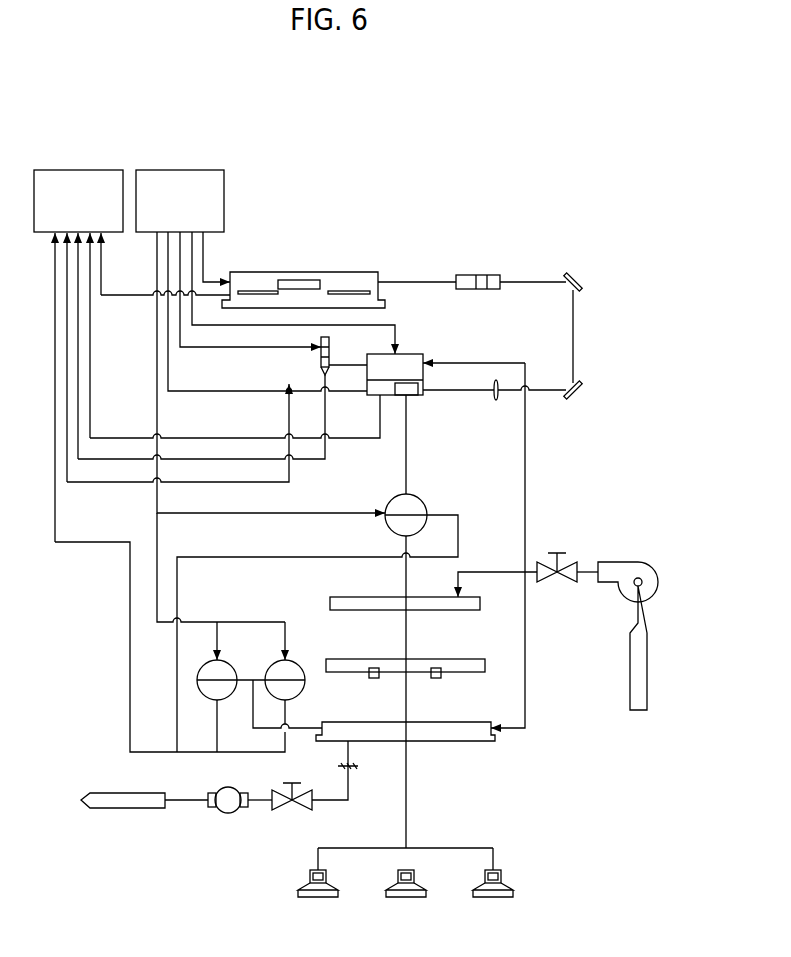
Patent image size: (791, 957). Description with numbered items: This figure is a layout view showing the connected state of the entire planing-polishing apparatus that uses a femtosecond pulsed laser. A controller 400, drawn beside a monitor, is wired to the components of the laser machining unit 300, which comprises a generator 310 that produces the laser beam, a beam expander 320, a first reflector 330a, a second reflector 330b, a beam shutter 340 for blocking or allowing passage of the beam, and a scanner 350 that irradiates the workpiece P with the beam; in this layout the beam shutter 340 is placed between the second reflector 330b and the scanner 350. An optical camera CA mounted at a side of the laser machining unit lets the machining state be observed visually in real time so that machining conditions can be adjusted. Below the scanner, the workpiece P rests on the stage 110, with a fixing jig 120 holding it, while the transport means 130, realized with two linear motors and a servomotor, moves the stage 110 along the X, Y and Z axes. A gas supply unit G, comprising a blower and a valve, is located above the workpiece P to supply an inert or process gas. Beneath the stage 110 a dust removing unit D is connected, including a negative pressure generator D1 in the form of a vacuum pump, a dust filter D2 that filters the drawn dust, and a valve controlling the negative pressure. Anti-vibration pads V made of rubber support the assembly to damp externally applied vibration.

The controller 400 is at (198, 168).
The laser machining unit 300 is at (411, 262).
The generator 310 is at (305, 272).
The beam expander 320 is at (478, 275).
The first reflector 330a is at (575, 276).
The second reflector 330b is at (577, 405).
The beam shutter 340 is at (496, 404).
The scanner 350 is at (410, 352).
The optical camera CA is at (321, 357).
The transport means 130 is at (419, 498).
The workpiece P is at (330, 603).
The gas supply unit G is at (620, 562).
The fixing jig 120 is at (460, 658).
The stage 110 is at (463, 721).
The dust removing unit D is at (233, 818).
The negative pressure generator D1 is at (228, 814).
The dust filter D2 is at (352, 770).
The anti-vibration pad V is at (493, 924).